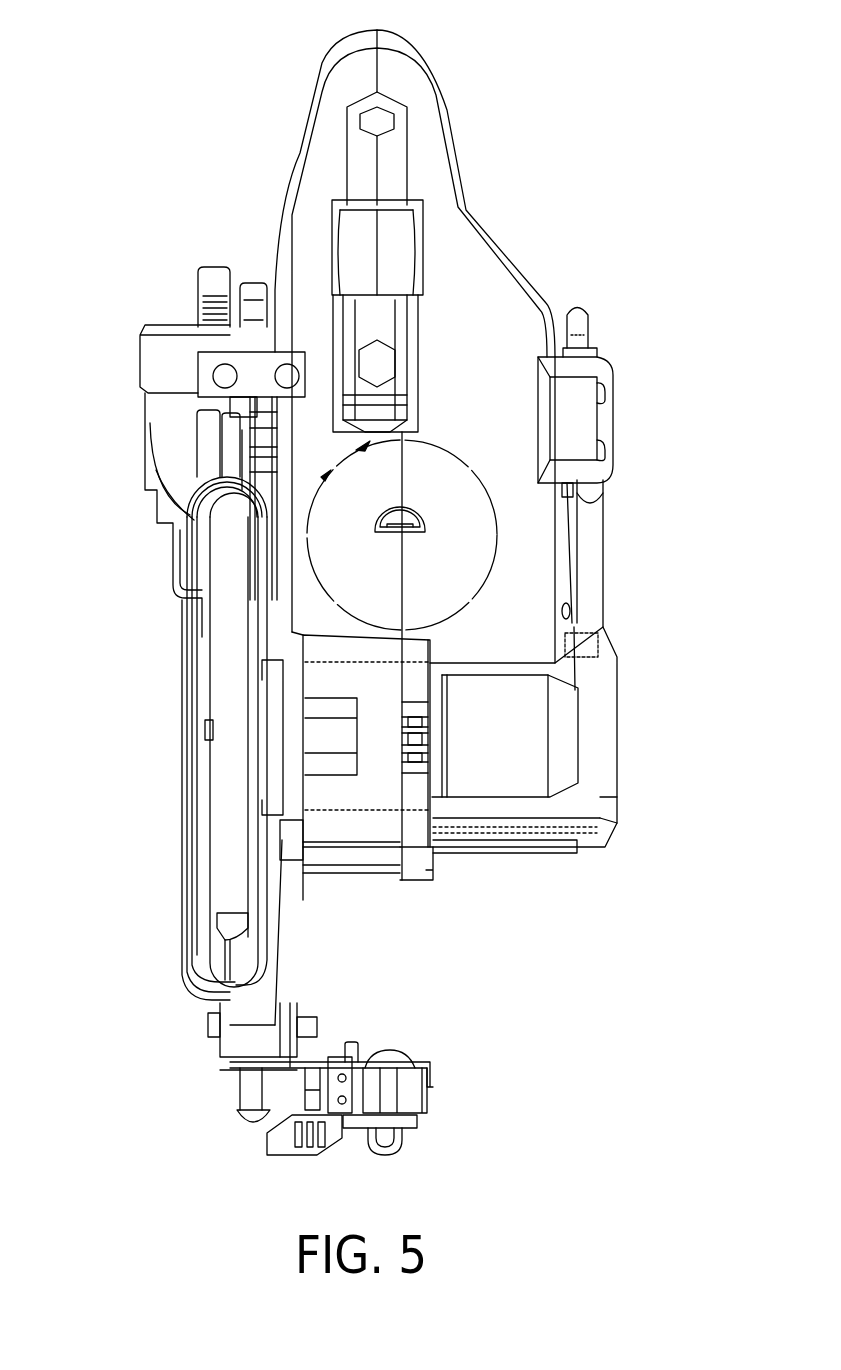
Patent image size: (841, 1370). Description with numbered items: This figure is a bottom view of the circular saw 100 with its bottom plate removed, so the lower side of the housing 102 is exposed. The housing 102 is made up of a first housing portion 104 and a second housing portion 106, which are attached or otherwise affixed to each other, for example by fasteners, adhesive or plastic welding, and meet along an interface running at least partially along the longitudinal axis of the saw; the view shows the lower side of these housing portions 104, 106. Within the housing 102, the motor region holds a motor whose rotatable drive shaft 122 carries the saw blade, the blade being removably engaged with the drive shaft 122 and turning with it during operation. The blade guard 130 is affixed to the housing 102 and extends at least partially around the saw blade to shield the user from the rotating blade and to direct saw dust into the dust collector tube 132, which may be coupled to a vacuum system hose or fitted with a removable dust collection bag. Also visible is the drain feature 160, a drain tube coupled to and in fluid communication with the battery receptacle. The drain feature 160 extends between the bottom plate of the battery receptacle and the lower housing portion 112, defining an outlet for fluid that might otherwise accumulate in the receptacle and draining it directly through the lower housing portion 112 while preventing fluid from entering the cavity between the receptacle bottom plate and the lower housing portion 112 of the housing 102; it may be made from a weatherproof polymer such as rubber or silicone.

The circular saw 100 is at (215, 100).
The housing 102 is at (445, 205).
The first housing portion 104 is at (507, 300).
The second housing portion 106 is at (308, 419).
The lower housing portion 112 is at (502, 438).
The drive shaft 122 is at (327, 745).
The blade guard 130 is at (220, 850).
The dust collector tube 132 is at (152, 353).
The drain feature 160 is at (425, 522).